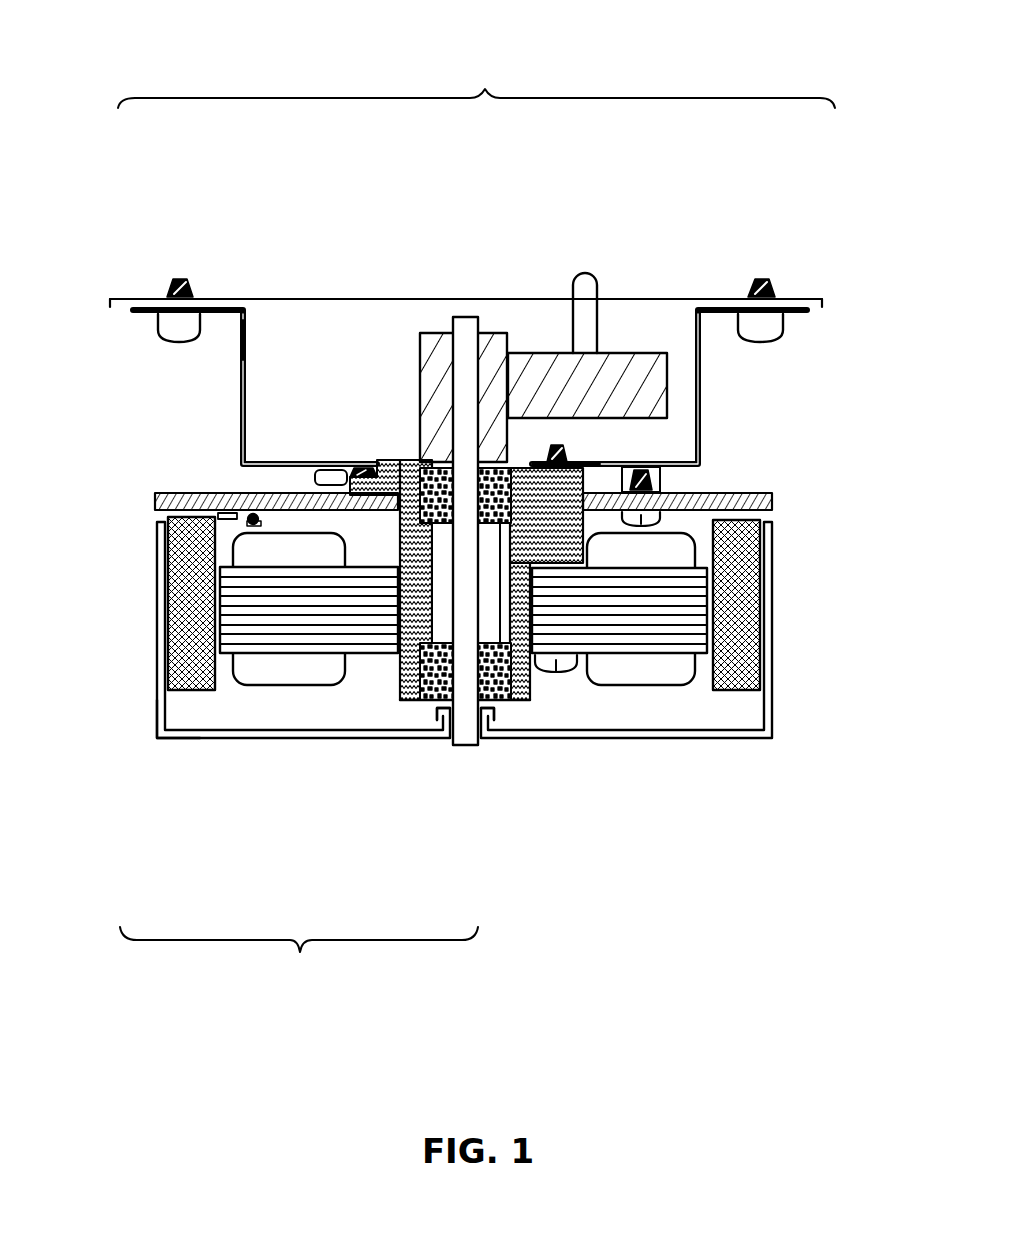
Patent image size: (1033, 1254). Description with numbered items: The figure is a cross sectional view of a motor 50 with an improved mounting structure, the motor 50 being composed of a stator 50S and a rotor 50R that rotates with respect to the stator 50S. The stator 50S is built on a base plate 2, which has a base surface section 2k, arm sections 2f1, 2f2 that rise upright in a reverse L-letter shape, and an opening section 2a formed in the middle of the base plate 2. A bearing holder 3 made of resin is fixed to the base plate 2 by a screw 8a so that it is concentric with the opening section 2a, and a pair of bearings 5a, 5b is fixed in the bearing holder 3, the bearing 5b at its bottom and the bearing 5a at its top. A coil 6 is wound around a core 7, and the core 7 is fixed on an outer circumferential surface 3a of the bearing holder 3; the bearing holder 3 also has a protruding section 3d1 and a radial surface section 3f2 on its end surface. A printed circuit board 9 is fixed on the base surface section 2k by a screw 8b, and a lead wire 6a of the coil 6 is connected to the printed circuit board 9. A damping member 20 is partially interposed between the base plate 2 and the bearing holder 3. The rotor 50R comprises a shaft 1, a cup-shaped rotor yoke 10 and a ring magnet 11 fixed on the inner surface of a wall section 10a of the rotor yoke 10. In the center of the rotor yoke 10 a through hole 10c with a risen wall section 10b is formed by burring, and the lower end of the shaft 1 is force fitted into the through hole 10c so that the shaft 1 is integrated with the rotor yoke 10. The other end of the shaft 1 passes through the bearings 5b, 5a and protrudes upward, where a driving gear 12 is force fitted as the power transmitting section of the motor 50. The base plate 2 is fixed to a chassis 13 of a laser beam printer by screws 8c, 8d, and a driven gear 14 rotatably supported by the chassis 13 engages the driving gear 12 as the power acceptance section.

The motor 50 is at (466, 153).
The stator 50S is at (476, 77).
The rotor 50R is at (299, 961).
The shaft 1 is at (477, 317).
The base plate 2 is at (277, 462).
The opening section 2a is at (532, 462).
The base surface section 2k is at (600, 462).
The arm section 2f1 is at (238, 353).
The arm section 2f2 is at (693, 347).
The bearing holder 3 is at (398, 460).
The outer circumferential surface 3a is at (393, 672).
The protruding section 3d1 is at (360, 470).
The radial surface section 3f2 is at (575, 565).
The bearing 5a is at (412, 462).
The bearing 5b is at (527, 467).
The coil 6 is at (663, 553).
The lead wire 6a is at (255, 527).
The core 7 is at (688, 597).
The screw 8a is at (557, 672).
The screw 8b is at (636, 525).
The screw 8c is at (160, 355).
The screw 8d is at (782, 357).
The printed circuit board 9 is at (170, 493).
The rotor yoke 10 is at (288, 733).
The wall section 10a is at (165, 703).
The risen wall section 10b is at (437, 715).
The through hole 10c is at (448, 750).
The ring magnet 11 is at (170, 633).
The driving gear 12 is at (435, 475).
The chassis 13 is at (477, 317).
The driven gear 14 is at (562, 363).
The damping member 20 is at (313, 478).